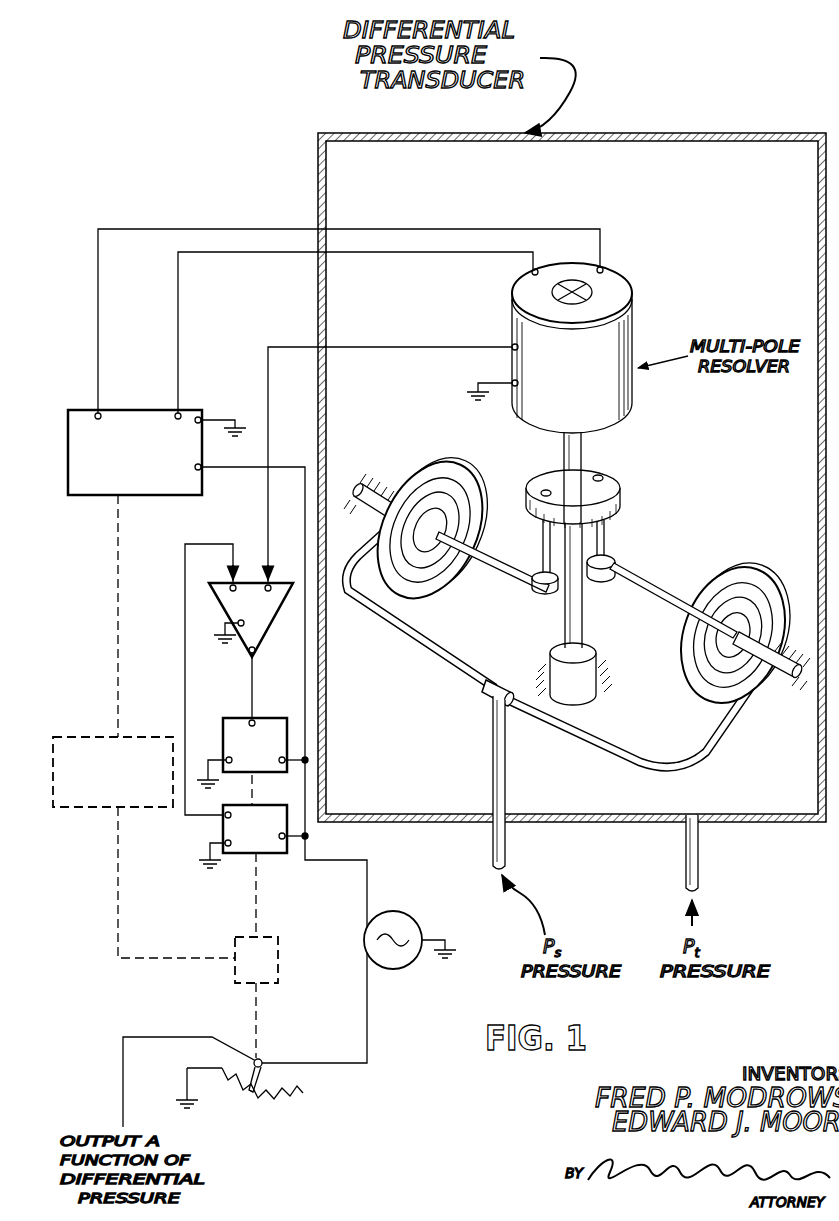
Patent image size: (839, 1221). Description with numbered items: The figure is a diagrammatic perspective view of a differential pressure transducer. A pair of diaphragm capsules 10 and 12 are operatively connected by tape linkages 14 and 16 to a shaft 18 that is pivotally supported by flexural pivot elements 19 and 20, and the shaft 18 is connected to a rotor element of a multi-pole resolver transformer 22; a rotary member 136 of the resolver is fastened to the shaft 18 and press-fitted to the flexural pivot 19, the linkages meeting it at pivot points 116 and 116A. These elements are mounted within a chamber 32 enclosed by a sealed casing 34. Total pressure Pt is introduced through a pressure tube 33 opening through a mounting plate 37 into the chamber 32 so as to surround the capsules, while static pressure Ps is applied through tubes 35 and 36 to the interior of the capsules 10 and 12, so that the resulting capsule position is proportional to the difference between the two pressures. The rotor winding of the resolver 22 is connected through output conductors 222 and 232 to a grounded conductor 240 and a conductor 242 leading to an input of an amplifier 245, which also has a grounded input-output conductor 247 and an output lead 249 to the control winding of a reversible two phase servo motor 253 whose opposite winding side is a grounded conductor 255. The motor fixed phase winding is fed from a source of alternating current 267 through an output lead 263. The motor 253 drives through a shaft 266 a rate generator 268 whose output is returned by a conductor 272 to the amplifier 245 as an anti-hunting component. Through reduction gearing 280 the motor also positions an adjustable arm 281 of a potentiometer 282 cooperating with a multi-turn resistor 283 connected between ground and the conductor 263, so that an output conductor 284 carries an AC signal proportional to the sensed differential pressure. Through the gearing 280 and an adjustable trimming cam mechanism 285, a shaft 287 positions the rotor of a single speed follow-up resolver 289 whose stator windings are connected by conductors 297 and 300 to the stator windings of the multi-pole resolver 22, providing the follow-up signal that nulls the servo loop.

The diaphragm capsule 10 is at (437, 461).
The diaphragm capsule 12 is at (752, 563).
The tape linkage 14 is at (494, 582).
The tape linkage 16 is at (658, 571).
The shaft 18 is at (583, 463).
The flexural pivot element 19 is at (590, 297).
The flexural pivot element 20 is at (550, 660).
The multi-pole resolver transformer 22 is at (512, 318).
The chamber 32 is at (627, 160).
The pressure conduit or tube 33 is at (702, 861).
The sealed casing 34 is at (714, 131).
The tube 35 is at (508, 853).
The tube 36 is at (428, 662).
The mounting plate 37 is at (730, 812).
The pivot pin 116 is at (486, 568).
The pivot pin 116A is at (625, 575).
The rotary member 136 is at (530, 482).
The output conductor 222 is at (519, 383).
The output conductor 232 is at (519, 347).
The grounded conductor 240 is at (478, 383).
The conductor 242 is at (268, 347).
The amplifier 245 is at (207, 592).
The grounded input-output conductor 247 is at (224, 628).
The output lead 249 is at (254, 672).
The reversible electrical two phase servo motor 253 is at (269, 716).
The grounded conductor 255 is at (208, 760).
The output lead 263 is at (235, 470).
The shaft 266 is at (258, 790).
The source of alternating current 267 is at (406, 916).
The rate generator 268 is at (222, 829).
The conductor 272 is at (185, 673).
The reduction gearing 280 is at (278, 976).
The adjustable arm 281 is at (262, 1062).
The potentiometer 282 is at (302, 1098).
The multi-turn resistor 283 is at (261, 1100).
The output conductor 284 is at (180, 1037).
The adjustable trimming cam mechanism 285 is at (91, 732).
The shaft 287 is at (118, 626).
The single speed follow-up resolver 289 is at (160, 498).
The conductor 297 is at (364, 228).
The conductor 300 is at (358, 253).